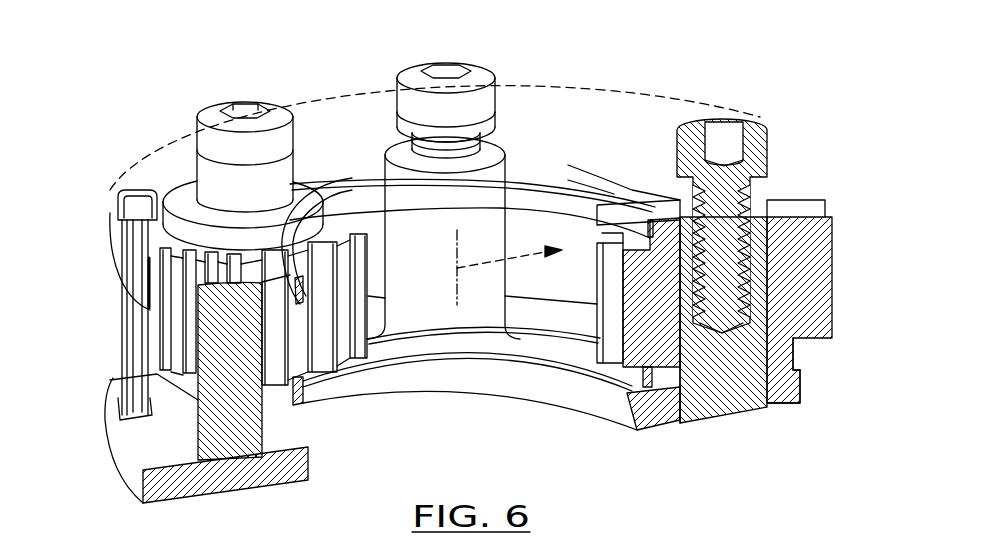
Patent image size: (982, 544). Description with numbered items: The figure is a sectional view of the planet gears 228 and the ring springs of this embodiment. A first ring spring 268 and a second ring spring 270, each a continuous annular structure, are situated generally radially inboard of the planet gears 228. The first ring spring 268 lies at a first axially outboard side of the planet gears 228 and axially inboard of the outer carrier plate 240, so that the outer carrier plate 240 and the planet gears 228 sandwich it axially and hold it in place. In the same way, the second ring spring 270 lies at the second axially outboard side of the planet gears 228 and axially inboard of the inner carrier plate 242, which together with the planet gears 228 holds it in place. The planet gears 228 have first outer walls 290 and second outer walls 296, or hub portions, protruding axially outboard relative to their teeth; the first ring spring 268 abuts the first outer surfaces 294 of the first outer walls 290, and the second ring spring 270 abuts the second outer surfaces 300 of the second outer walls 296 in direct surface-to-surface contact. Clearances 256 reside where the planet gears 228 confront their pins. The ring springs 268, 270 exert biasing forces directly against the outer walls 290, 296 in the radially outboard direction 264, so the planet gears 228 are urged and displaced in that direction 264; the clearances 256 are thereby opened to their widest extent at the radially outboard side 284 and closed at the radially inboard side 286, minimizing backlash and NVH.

The planet gears 228 is at (152, 323).
The outer carrier plate 240 is at (658, 112).
The inner carrier plate 242 is at (580, 393).
The clearances 256 is at (790, 300).
The radially outboard direction 264 is at (531, 262).
The first ring spring 268 is at (593, 212).
The second ring spring 270 is at (397, 382).
The radially outboard side 284 is at (763, 387).
The radially inboard side 286 is at (680, 387).
The first outer walls 290 is at (183, 190).
The first outer surfaces 294 is at (195, 228).
The second outer walls 296 is at (800, 400).
The second outer surfaces 300 is at (795, 355).